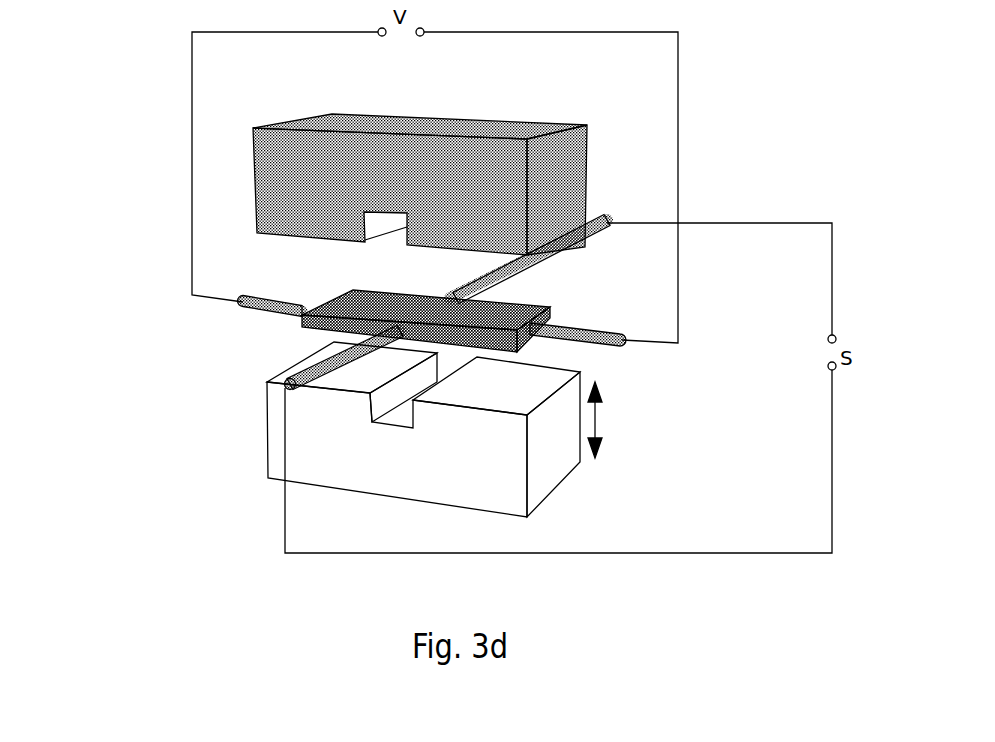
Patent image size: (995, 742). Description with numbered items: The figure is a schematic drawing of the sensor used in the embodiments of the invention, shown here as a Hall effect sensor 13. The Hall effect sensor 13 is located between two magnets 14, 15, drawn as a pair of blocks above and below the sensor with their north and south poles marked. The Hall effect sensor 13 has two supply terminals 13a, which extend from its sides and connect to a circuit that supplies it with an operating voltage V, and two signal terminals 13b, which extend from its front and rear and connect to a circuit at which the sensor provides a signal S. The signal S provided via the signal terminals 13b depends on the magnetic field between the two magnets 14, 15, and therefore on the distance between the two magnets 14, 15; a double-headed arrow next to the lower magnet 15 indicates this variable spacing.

The Hall effect sensor 13 is at (310, 323).
The supply terminals 13a is at (300, 311).
The signal terminals 13b is at (270, 379).
The magnet 14 is at (252, 167).
The magnet 15 is at (268, 476).